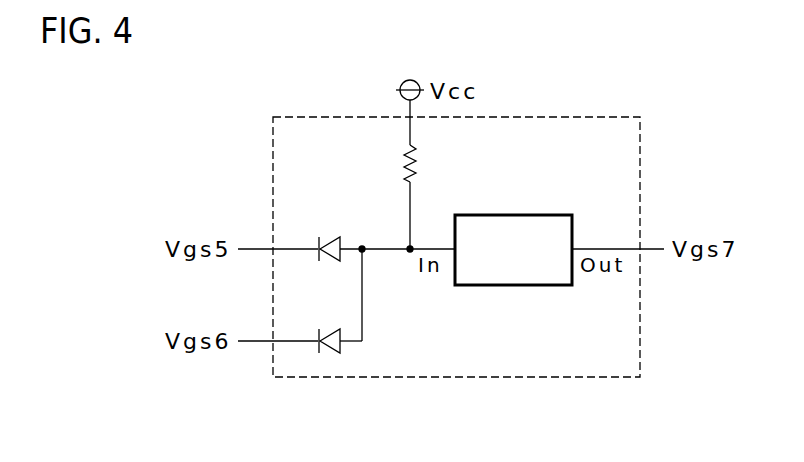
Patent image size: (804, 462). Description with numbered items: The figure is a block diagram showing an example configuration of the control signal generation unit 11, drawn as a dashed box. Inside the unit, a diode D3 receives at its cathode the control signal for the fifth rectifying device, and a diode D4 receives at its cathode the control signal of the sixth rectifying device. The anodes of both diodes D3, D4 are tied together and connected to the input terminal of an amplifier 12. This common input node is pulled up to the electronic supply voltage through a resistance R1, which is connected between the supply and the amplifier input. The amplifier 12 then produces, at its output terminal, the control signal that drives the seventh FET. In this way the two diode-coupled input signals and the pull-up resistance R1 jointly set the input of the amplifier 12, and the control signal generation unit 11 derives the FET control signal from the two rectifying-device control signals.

The control signal generation unit 11 is at (644, 136).
The amplifier 12 is at (528, 215).
The resistance R1 is at (424, 166).
The diode D3 is at (333, 232).
The diode D4 is at (333, 325).